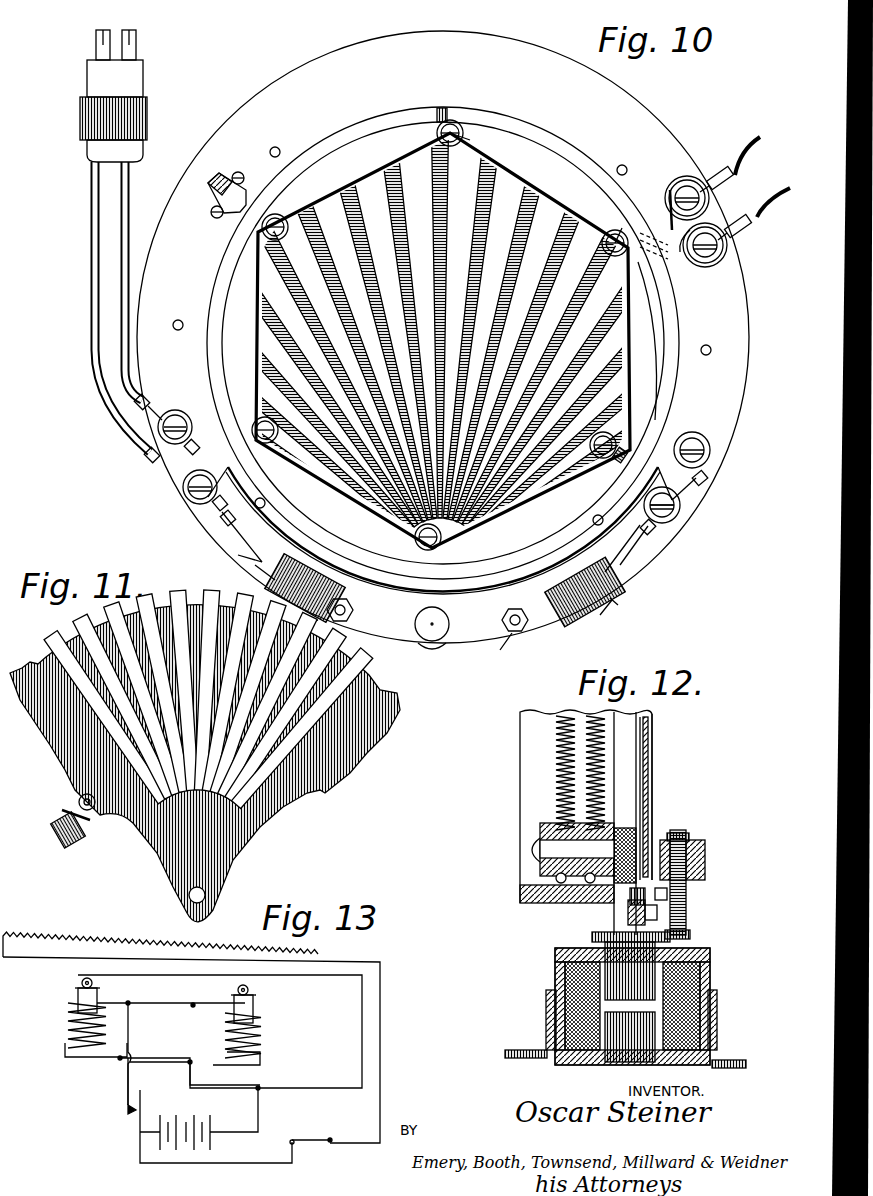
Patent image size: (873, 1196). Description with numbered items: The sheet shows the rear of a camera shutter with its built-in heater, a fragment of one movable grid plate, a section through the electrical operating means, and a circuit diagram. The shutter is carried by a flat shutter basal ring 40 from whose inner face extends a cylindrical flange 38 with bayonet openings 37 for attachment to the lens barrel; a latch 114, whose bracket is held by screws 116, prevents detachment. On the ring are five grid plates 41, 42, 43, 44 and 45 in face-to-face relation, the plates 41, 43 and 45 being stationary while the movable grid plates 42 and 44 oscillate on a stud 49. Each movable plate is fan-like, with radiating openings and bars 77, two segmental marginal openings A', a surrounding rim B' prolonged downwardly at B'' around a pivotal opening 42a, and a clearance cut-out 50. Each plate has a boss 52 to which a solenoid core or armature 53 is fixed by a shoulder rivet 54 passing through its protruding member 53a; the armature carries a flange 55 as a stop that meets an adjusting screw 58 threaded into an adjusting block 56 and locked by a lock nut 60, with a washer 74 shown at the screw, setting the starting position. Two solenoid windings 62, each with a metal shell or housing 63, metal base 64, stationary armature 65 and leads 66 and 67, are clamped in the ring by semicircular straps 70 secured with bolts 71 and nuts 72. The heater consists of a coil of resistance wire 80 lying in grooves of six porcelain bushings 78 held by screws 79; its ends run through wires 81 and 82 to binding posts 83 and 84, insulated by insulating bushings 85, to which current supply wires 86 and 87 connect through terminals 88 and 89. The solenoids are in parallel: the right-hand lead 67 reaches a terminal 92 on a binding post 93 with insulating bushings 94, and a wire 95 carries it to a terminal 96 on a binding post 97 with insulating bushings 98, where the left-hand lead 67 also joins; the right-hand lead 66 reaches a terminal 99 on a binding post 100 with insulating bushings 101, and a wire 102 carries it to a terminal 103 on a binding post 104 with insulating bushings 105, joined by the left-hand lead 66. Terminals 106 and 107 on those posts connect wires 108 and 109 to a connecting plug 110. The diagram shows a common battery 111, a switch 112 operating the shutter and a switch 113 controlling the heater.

In FIG. 10, the bayonet openings 37 is at (441, 112).
In FIG. 10, the cylindrical flange 38 is at (321, 146).
In FIG. 12, the cylindrical flange 38 is at (527, 772).
In FIG. 10, the shutter basal ring 40 is at (485, 44).
In FIG. 10, the stationary grid plate 41 is at (488, 228).
In FIG. 12, the stationary grid plate 41 is at (637, 766).
In FIG. 11, the movable grid plate 42 is at (400, 720).
In FIG. 12, the movable grid plate 42 is at (641, 790).
In FIG. 11, the pivotal opening 42a is at (190, 902).
In FIG. 12, the stationary grid plate 43 is at (645, 820).
In FIG. 12, the movable grid plate 44 is at (652, 797).
In FIG. 12, the stationary grid plate 45 is at (652, 743).
In FIG. 10, the stud 49 is at (450, 625).
In FIG. 11, the clearance cut-out 50 is at (305, 798).
In FIG. 11, the boss 52 is at (107, 807).
In FIG. 11, the solenoid core or armature 53 is at (72, 845).
In FIG. 12, the solenoid core or armature 53 is at (600, 982).
In FIG. 13, the solenoid core or armature 53 is at (77, 997).
In FIG. 11, the protruding member 53a is at (90, 796).
In FIG. 12, the protruding member 53a is at (648, 903).
In FIG. 13, the protruding member 53a is at (80, 981).
In FIG. 11, the shoulder rivet 54 is at (92, 815).
In FIG. 12, the shoulder rivet 54 is at (630, 910).
In FIG. 11, the flange 55 is at (70, 807).
In FIG. 12, the flange 55 is at (592, 935).
In FIG. 12, the adjusting block 56 is at (705, 857).
In FIG. 12, the adjusting screw 58 is at (686, 920).
In FIG. 12, the lock nut 60 is at (690, 887).
In FIG. 12, the solenoid winding 62 is at (692, 980).
In FIG. 13, the solenoid winding 62 is at (68, 1025).
In FIG. 10, the metal shell or housing 63 is at (340, 578).
In FIG. 12, the metal shell or housing 63 is at (558, 967).
In FIG. 12, the metal base 64 is at (585, 1060).
In FIG. 12, the stationary armature 65 is at (632, 1060).
In FIG. 10, the lead 66 is at (228, 534).
In FIG. 12, the lead 66 is at (512, 1058).
In FIG. 13, the lead 66 is at (112, 1003).
In FIG. 10, the lead 67 is at (255, 566).
In FIG. 12, the lead 67 is at (728, 1066).
In FIG. 13, the lead 67 is at (100, 1058).
In FIG. 10, the semicircular strap 70 is at (352, 604).
In FIG. 12, the semicircular strap 70 is at (547, 1027).
In FIG. 10, the bolt 71 is at (350, 610).
In FIG. 10, the nut 72 is at (238, 556).
In FIG. 12, the washer 74 is at (689, 833).
In FIG. 11, the fins 77 is at (83, 642).
In FIG. 10, the porcelain bushing 78 is at (470, 140).
In FIG. 12, the porcelain bushing 78 is at (540, 870).
In FIG. 10, the screw 79 is at (456, 128).
In FIG. 12, the screw 79 is at (540, 857).
In FIG. 10, the coil of resistance wire 80 is at (405, 150).
In FIG. 12, the coil of resistance wire 80 is at (560, 805).
In FIG. 13, the coil of resistance wire 80 is at (88, 944).
In FIG. 10, the wire 81 is at (668, 222).
In FIG. 10, the wire 82 is at (702, 232).
In FIG. 10, the binding post 83 is at (680, 190).
In FIG. 10, the binding post 84 is at (712, 258).
In FIG. 10, the insulating bushing 85 is at (702, 185).
In FIG. 10, the current supply wire 86 is at (752, 147).
In FIG. 13, the current supply wire 86 is at (362, 1060).
In FIG. 10, the current supply wire 87 is at (760, 212).
In FIG. 13, the current supply wire 87 is at (383, 1028).
In FIG. 10, the terminal 88 is at (723, 183).
In FIG. 10, the terminal 89 is at (740, 233).
In FIG. 10, the terminal 92 is at (702, 483).
In FIG. 10, the binding post 93 is at (712, 460).
In FIG. 10, the insulating bushing 94 is at (693, 434).
In FIG. 10, the wire 95 is at (575, 522).
In FIG. 13, the wire 95 is at (158, 1062).
In FIG. 10, the terminal 96 is at (214, 517).
In FIG. 10, the binding post 97 is at (183, 490).
In FIG. 10, the insulating bushing 98 is at (193, 508).
In FIG. 10, the terminal 99 is at (656, 541).
In FIG. 10, the binding post 100 is at (682, 516).
In FIG. 10, the insulating bushing 101 is at (682, 508).
In FIG. 10, the wire 102 is at (480, 578).
In FIG. 13, the wire 102 is at (165, 1003).
In FIG. 10, the terminal 103 is at (199, 447).
In FIG. 10, the binding post 104 is at (192, 427).
In FIG. 10, the insulating bushing 105 is at (185, 412).
In FIG. 10, the terminal 106 is at (158, 462).
In FIG. 10, the terminal 107 is at (147, 404).
In FIG. 10, the wire 108 is at (89, 190).
In FIG. 13, the wire 108 is at (127, 1092).
In FIG. 10, the wire 109 is at (130, 197).
In FIG. 13, the wire 109 is at (220, 1085).
In FIG. 10, the connecting plug 110 is at (140, 118).
In FIG. 13, the common battery 111 is at (182, 1117).
In FIG. 13, the switch 112 is at (133, 1117).
In FIG. 13, the switch 113 is at (312, 1132).
In FIG. 10, the latch 114 is at (214, 180).
In FIG. 10, the screw 116 is at (246, 176).
In FIG. 11, the marginal opening A' is at (47, 751).
In FIG. 11, the surrounding rim B' is at (23, 738).
In FIG. 11, the downward prolongation B'' is at (156, 871).